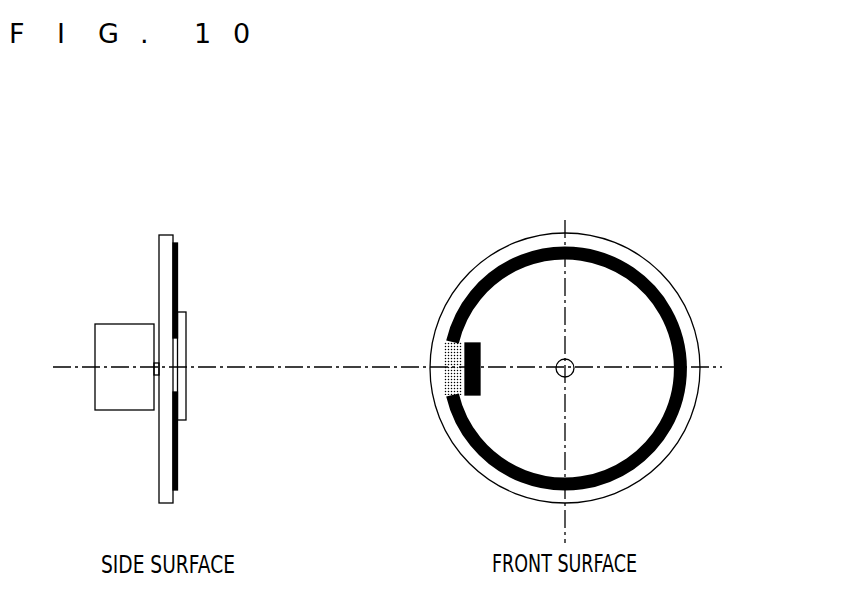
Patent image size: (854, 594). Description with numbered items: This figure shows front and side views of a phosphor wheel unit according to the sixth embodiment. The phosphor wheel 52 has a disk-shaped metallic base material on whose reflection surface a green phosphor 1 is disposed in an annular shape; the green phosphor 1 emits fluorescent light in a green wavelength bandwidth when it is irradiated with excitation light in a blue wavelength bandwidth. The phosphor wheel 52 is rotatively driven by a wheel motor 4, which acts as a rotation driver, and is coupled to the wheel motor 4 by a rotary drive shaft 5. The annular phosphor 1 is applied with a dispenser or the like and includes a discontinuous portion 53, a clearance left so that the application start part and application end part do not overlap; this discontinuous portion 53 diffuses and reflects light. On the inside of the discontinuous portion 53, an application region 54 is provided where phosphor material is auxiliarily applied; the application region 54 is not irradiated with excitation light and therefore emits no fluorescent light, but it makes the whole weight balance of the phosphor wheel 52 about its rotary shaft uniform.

The green phosphor 1 is at (178, 275).
The wheel motor 4 is at (108, 393).
The rotary drive shaft 5 is at (155, 365).
The phosphor wheel 52 is at (165, 254).
The discontinuous portion 53 is at (187, 357).
The application region 54 is at (447, 356).